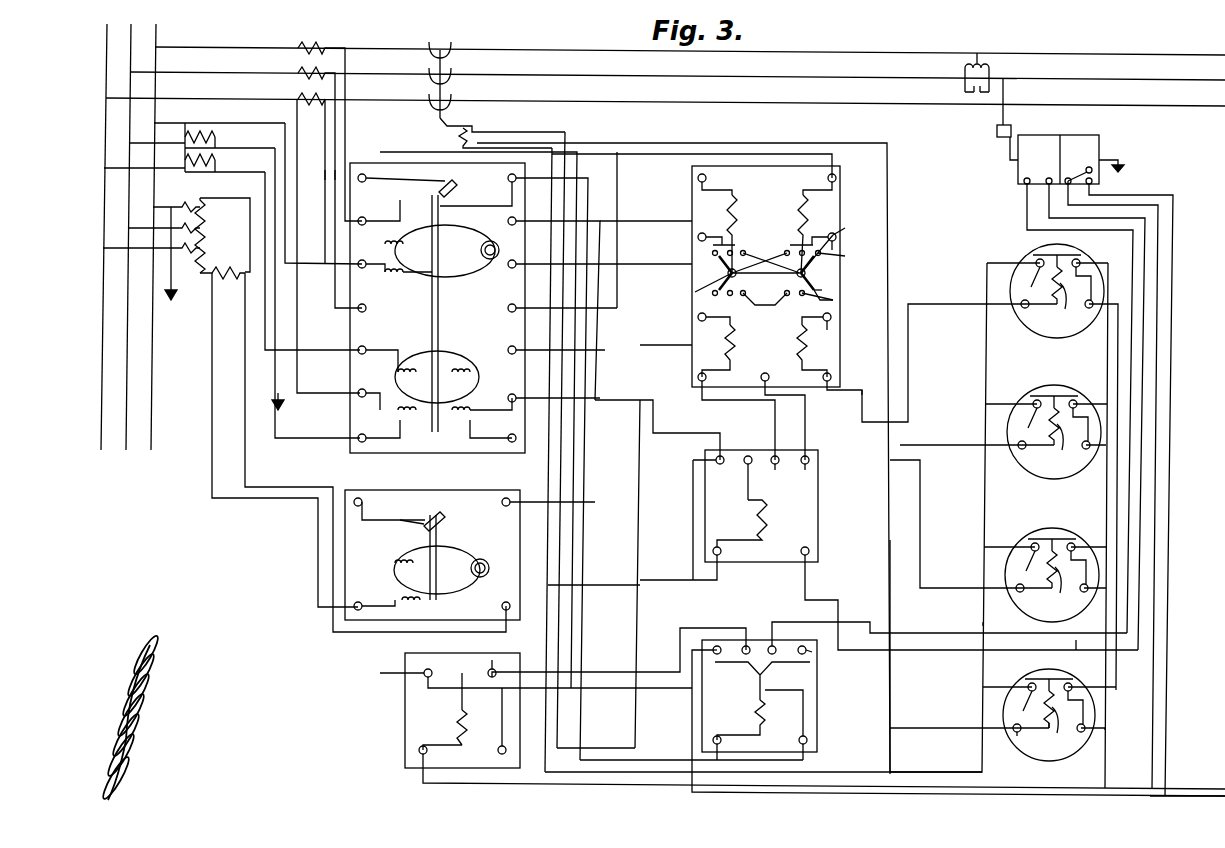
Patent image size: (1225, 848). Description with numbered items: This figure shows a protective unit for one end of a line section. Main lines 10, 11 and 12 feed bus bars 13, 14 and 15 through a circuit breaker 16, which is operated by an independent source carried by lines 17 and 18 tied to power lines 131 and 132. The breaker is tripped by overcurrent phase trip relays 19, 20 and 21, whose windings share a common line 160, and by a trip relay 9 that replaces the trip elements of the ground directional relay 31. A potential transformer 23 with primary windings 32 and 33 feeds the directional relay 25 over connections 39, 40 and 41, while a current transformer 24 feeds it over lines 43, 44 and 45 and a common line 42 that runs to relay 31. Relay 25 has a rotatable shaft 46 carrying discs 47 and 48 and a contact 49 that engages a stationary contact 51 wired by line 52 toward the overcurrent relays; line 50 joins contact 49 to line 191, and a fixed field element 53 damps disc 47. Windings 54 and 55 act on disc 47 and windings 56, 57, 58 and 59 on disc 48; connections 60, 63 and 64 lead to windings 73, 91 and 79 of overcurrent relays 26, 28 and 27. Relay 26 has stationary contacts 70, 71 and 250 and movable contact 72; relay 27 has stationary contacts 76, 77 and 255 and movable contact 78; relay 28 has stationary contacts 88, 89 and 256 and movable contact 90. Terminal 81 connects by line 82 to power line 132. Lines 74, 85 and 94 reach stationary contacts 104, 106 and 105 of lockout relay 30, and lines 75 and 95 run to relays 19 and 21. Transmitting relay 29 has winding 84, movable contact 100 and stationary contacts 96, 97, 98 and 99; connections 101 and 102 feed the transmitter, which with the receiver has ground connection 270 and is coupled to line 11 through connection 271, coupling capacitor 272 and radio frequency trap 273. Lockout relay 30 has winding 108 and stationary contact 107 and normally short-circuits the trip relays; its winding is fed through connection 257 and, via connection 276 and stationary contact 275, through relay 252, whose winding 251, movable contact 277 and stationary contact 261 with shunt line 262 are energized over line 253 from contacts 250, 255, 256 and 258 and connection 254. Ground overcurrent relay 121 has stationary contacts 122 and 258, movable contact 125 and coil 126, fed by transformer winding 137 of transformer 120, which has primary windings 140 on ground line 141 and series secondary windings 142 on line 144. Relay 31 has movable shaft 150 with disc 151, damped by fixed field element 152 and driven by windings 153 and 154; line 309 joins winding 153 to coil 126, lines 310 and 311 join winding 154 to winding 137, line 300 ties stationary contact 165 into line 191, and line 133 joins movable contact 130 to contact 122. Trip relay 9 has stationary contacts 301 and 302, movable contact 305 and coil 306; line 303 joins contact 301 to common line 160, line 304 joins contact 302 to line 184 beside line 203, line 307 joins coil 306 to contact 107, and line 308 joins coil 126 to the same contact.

The trip relay 9 is at (1098, 746).
The main line 10 is at (572, 47).
The main line 11 is at (599, 76).
The main line 12 is at (616, 104).
The bus bar 13 is at (151, 418).
The bus bar 14 is at (127, 395).
The bus bar 15 is at (102, 372).
The circuit breaker 16 is at (450, 47).
The line 17 is at (517, 132).
The line 18 is at (546, 148).
The trip relay 19 is at (1016, 249).
The trip relay 20 is at (1026, 389).
The trip relay 21 is at (1027, 532).
The potential transformer 23 is at (209, 119).
The current transformer 24 is at (302, 44).
The directional relay 25 is at (360, 154).
The overcurrent relay 26 is at (684, 218).
The overcurrent relay 27 is at (841, 211).
The overcurrent relay 28 is at (684, 348).
The transmitting relay 29 is at (825, 746).
The lockout relay 30 is at (830, 495).
The ground directional relay 31 is at (337, 628).
The primary winding 32 is at (231, 136).
The primary winding 33 is at (231, 160).
The connection 39 is at (286, 188).
The connection 40 is at (276, 209).
The connection 41 is at (266, 230).
The common line 42 is at (298, 376).
The line 43 is at (334, 124).
The line 44 is at (334, 145).
The line 45 is at (326, 167).
The rotatable shaft 46 is at (440, 299).
The disc 47 is at (445, 251).
The disc 48 is at (437, 377).
The contact 49 is at (456, 187).
The line 50 is at (511, 203).
The stationary contact 51 is at (440, 184).
The line 52 is at (396, 152).
The fixed field element 53 is at (498, 249).
The winding 54 is at (386, 244).
The winding 55 is at (392, 273).
The winding 56 is at (398, 372).
The winding 57 is at (398, 410).
The winding 58 is at (470, 374).
The winding 59 is at (460, 414).
The connection 60 is at (668, 180).
The connection 63 is at (589, 338).
The connection 64 is at (836, 166).
The stationary contact 70 is at (713, 253).
The stationary contact 71 is at (744, 252).
The movable contact 72 is at (734, 190).
The winding 73 is at (738, 212).
The line 74 is at (654, 418).
The line 75 is at (909, 365).
The stationary contact 76 is at (810, 238).
The stationary contact 77 is at (840, 254).
The movable contact 78 is at (802, 190).
The winding 79 is at (800, 224).
The terminal 81 is at (819, 276).
The line 82 is at (892, 290).
The winding 84 is at (756, 706).
The connection 85 is at (990, 462).
The stationary contact 88 is at (713, 293).
The stationary contact 89 is at (730, 319).
The movable contact 90 is at (731, 373).
The winding 91 is at (736, 352).
The line 94 is at (790, 404).
The line 95 is at (921, 568).
The stationary contact 96 is at (771, 644).
The stationary contact 97 is at (808, 655).
The stationary contact 98 is at (716, 645).
The stationary contact 99 is at (798, 613).
The movable contact 100 is at (766, 682).
The connection 101 is at (1030, 636).
The connection 102 is at (1062, 648).
The stationary contact 104 is at (747, 468).
The stationary contact 105 is at (808, 463).
The stationary contact 106 is at (775, 468).
The stationary contact 107 is at (716, 458).
The winding 108 is at (1185, 288).
The transformer 120 is at (203, 195).
The ground overcurrent relay 121 is at (836, 353).
The stationary contact 122 is at (794, 319).
The movable contact 125 is at (800, 373).
The coil 126 is at (798, 352).
The movable contact 130 is at (420, 522).
The power line 131 is at (1175, 790).
The power line 132 is at (1210, 798).
The line 133 is at (594, 522).
The transformer winding 137 is at (234, 262).
The primary winding 140 is at (182, 249).
The ground line 141 is at (174, 285).
The secondary winding 142 is at (212, 210).
The line 144 is at (246, 197).
The movable shaft 150 is at (437, 531).
The disc 151 is at (437, 570).
The fixed field element 152 is at (482, 578).
The winding 153 is at (396, 563).
The winding 154 is at (402, 600).
The common line 160 is at (1106, 491).
The stationary contact 165 is at (436, 512).
The line 184 is at (980, 748).
The line 191 is at (584, 566).
The conductor 203 is at (1172, 318).
The stationary contact 250 is at (724, 238).
The winding 251 is at (458, 724).
The relay 252 is at (396, 715).
The line 253 is at (638, 621).
The connection 254 is at (430, 750).
The stationary contact 255 is at (853, 227).
The stationary contact 256 is at (728, 294).
The connection 257 is at (692, 580).
The stationary contact 258 is at (840, 299).
The stationary contact 261 is at (410, 673).
The shunt line 262 is at (510, 690).
The ground connection 270 is at (1123, 153).
The connection 271 is at (1005, 93).
The coupling capacitor 272 is at (997, 131).
The radio frequency trap 273 is at (981, 62).
The stationary contact 275 is at (494, 666).
The connection 276 is at (637, 658).
The movable contact 277 is at (462, 702).
The line 300 is at (507, 510).
The stationary contact 301 is at (1072, 686).
The stationary contact 302 is at (692, 510).
The line 303 is at (1108, 698).
The line 304 is at (983, 688).
The movable contact 305 is at (1025, 742).
The coil 306 is at (1052, 732).
The line 307 is at (935, 730).
The line 308 is at (806, 405).
The line 309 is at (580, 380).
The line 310 is at (317, 534).
The line 311 is at (244, 400).